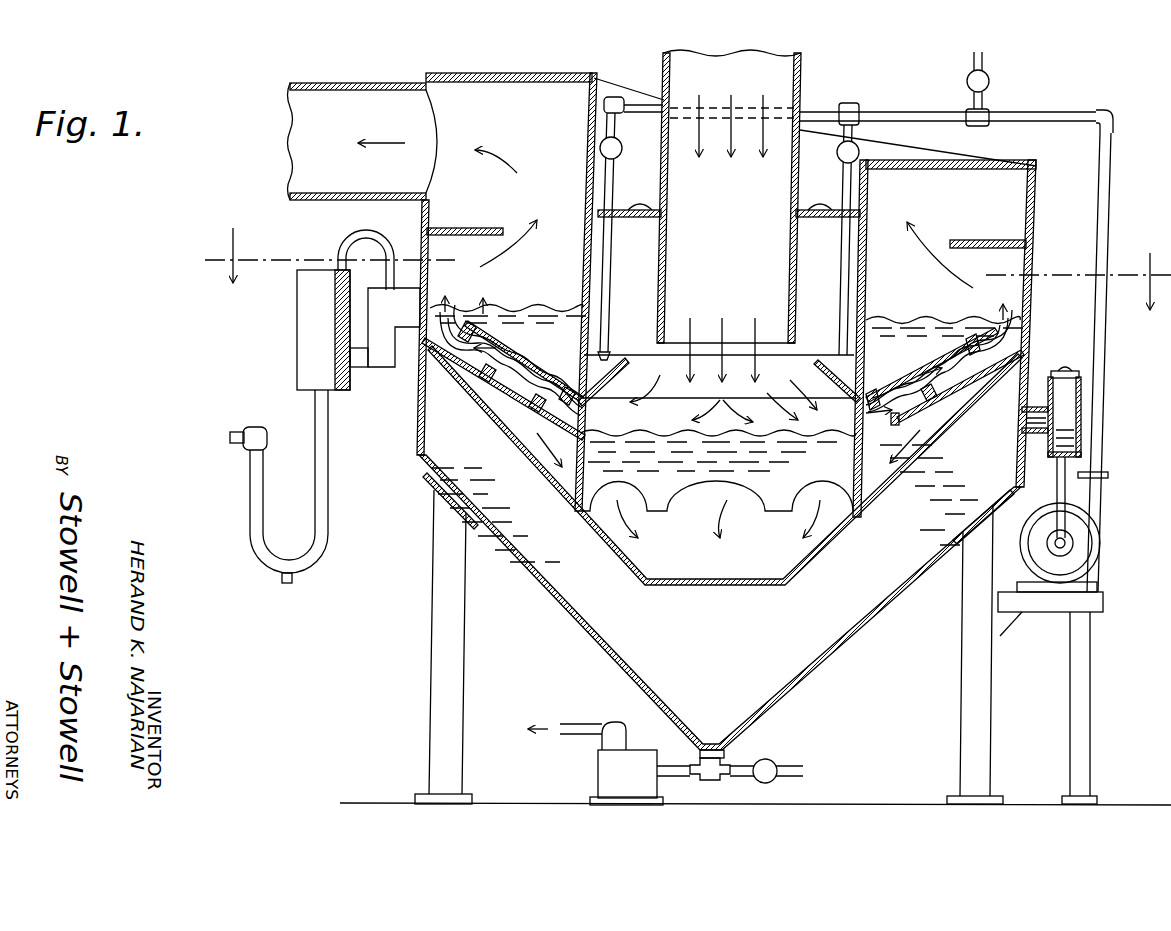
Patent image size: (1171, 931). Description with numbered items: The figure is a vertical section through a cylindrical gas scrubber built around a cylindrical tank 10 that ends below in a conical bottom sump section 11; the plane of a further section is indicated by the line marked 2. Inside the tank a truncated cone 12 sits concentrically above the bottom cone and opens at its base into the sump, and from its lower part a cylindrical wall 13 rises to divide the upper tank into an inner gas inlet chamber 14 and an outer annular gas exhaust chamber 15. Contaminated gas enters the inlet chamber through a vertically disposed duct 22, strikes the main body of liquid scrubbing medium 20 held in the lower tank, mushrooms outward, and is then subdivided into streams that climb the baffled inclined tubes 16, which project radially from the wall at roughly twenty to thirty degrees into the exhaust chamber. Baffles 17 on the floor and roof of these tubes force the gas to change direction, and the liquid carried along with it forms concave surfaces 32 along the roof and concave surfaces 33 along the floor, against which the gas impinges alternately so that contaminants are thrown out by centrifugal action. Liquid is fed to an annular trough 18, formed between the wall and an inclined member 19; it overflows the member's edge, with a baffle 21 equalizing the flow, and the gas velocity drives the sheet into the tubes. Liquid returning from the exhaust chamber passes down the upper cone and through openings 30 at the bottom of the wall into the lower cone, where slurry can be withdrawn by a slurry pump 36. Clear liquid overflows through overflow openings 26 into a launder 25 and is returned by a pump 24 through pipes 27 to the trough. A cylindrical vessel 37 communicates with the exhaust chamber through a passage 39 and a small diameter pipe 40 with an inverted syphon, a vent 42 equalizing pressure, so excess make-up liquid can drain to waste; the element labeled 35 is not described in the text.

The section line 2- 2 is at (688, 268).
The cylindrical tank 10 is at (1040, 216).
The conical bottom sump section 11 is at (842, 647).
The truncated cone 12 is at (866, 512).
The cylindrical wall 13 is at (868, 277).
The gas inlet chamber 14 is at (640, 258).
The annular gas exhaust chamber 15 is at (545, 160).
The baffled inclined tubes 16 is at (494, 316).
The baffles 17 is at (530, 355).
The trough 18 is at (850, 366).
The inclined member 19 is at (614, 376).
The body of liquid scrubbing medium 20 is at (805, 474).
The baffle 21 is at (609, 352).
The vertically disposed duct 22 is at (797, 178).
The pump 24 is at (1100, 553).
The launder 25 is at (1070, 398).
The overflow openings 26 is at (1035, 418).
The pipes 27 is at (1106, 189).
The openings 30 is at (647, 520).
The concave surfaces 32 is at (498, 342).
The concave surfaces 33 is at (510, 377).
The connector block 35 is at (380, 295).
The slurry pump 36 is at (605, 772).
The cylindrical vessel 37 is at (297, 324).
The passage 39 is at (360, 367).
The small diameter pipe 40 is at (358, 438).
The vent 42 is at (346, 232).